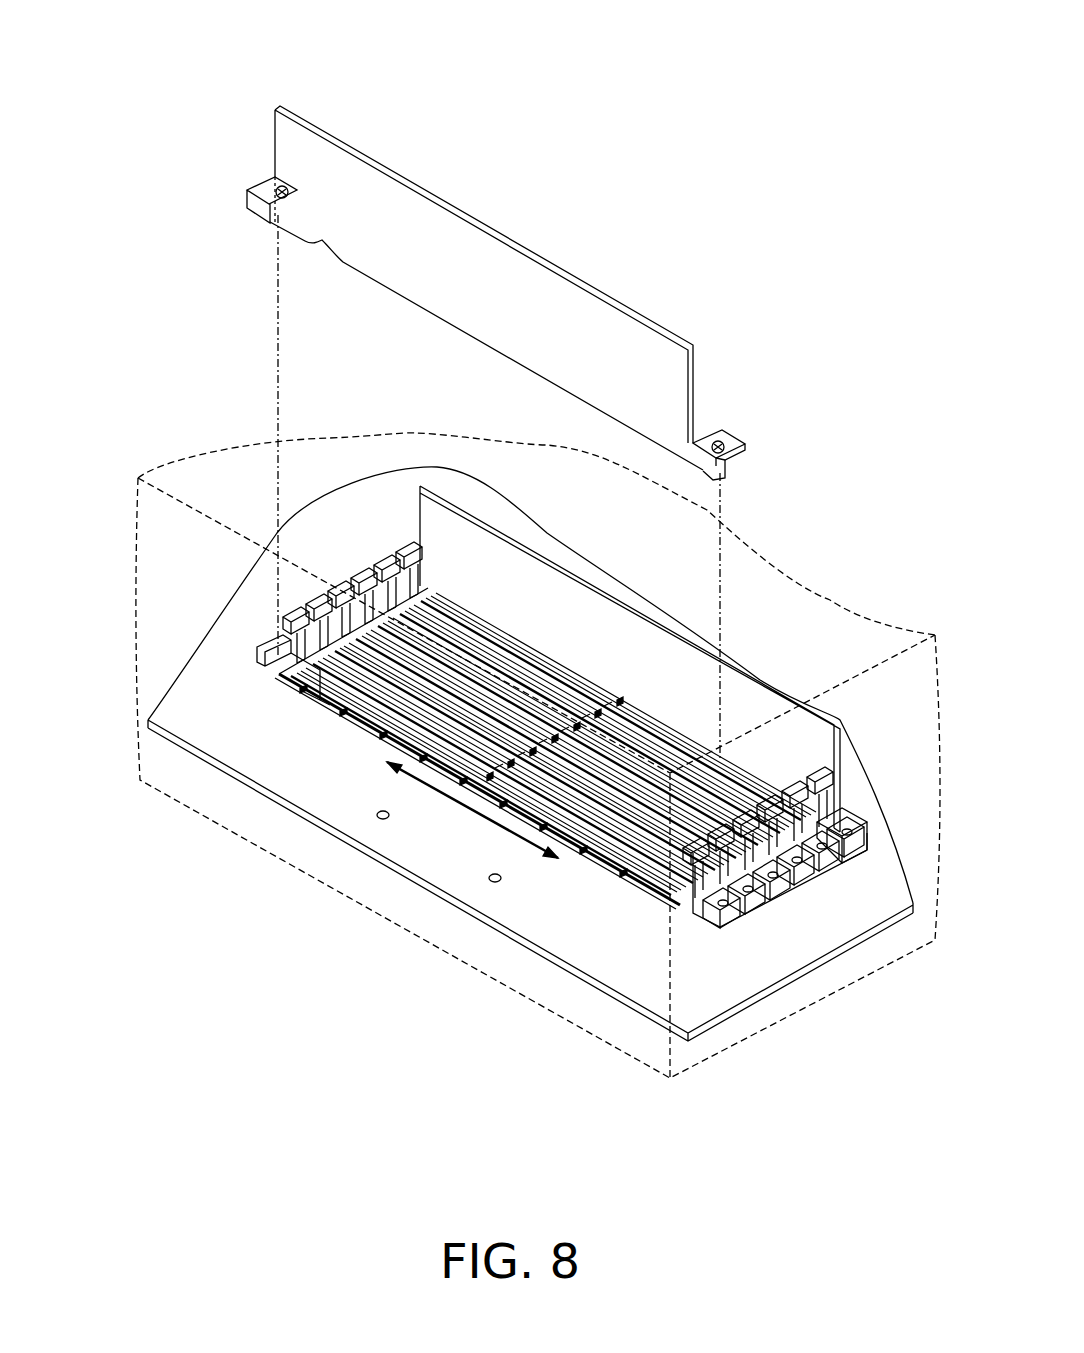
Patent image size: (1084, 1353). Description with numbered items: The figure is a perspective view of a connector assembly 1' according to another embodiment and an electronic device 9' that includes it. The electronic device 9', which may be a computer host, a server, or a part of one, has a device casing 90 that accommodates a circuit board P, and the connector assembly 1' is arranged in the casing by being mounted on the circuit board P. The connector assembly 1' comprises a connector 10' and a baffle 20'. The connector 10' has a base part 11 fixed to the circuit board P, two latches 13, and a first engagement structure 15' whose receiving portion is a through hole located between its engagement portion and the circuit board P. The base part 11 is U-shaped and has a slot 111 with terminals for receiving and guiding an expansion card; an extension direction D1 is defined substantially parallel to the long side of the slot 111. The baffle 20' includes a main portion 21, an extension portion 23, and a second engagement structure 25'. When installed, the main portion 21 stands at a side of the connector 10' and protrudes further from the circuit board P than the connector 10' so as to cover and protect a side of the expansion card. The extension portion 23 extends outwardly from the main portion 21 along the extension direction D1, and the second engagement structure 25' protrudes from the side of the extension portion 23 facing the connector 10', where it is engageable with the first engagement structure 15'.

The electronic device 9' is at (497, 554).
The connector assembly 1' is at (461, 587).
The baffle 20' is at (461, 519).
The main portion 21 is at (574, 270).
The extension portion 23 is at (763, 483).
The second engagement structure 25' is at (776, 444).
The connector 10' is at (481, 777).
The base part 11 is at (583, 853).
The latch 13 is at (703, 915).
The first engagement structure 15' is at (507, 805).
The slot 111 is at (625, 712).
The circuit board P is at (887, 875).
The device casing 90 is at (792, 1008).
The extension direction D1 is at (472, 810).